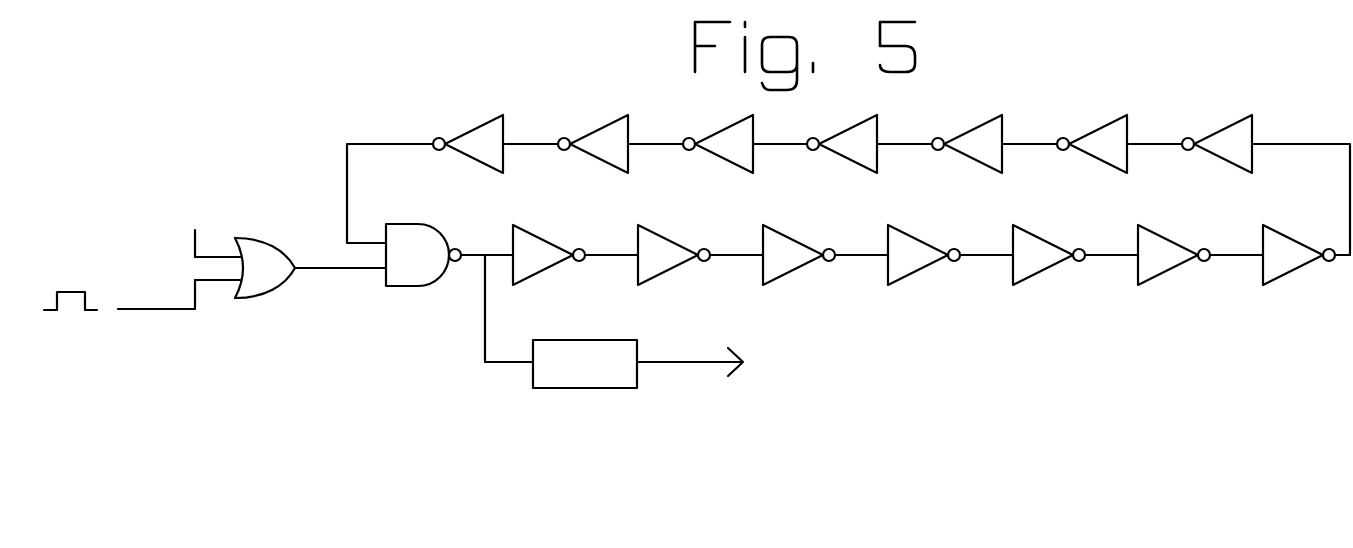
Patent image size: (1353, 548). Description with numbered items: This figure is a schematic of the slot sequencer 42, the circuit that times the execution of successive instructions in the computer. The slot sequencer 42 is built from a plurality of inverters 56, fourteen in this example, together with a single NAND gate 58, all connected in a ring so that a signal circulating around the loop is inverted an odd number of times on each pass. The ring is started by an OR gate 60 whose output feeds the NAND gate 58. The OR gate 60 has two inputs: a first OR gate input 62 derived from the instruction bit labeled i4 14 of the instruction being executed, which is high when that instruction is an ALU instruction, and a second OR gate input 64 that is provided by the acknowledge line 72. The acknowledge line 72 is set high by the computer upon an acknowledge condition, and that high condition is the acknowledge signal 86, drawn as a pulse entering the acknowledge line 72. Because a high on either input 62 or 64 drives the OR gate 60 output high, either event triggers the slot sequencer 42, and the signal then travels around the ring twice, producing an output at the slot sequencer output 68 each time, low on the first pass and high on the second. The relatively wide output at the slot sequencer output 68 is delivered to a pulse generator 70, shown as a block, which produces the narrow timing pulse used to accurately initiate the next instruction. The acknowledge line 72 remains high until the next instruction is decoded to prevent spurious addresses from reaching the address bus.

The input signal 14 is at (215, 231).
The slot sequencer 42 is at (382, 120).
The inverter 56 is at (600, 138).
The NAND gate 58 is at (420, 262).
The OR gate 60 is at (262, 270).
The first OR gate input 62 is at (213, 257).
The second OR gate input 64 is at (195, 280).
The slot sequencer output 68 is at (487, 300).
The pulse generator 70 is at (604, 375).
The acknowledge line 72 is at (135, 308).
The acknowledge signal 86 is at (68, 292).